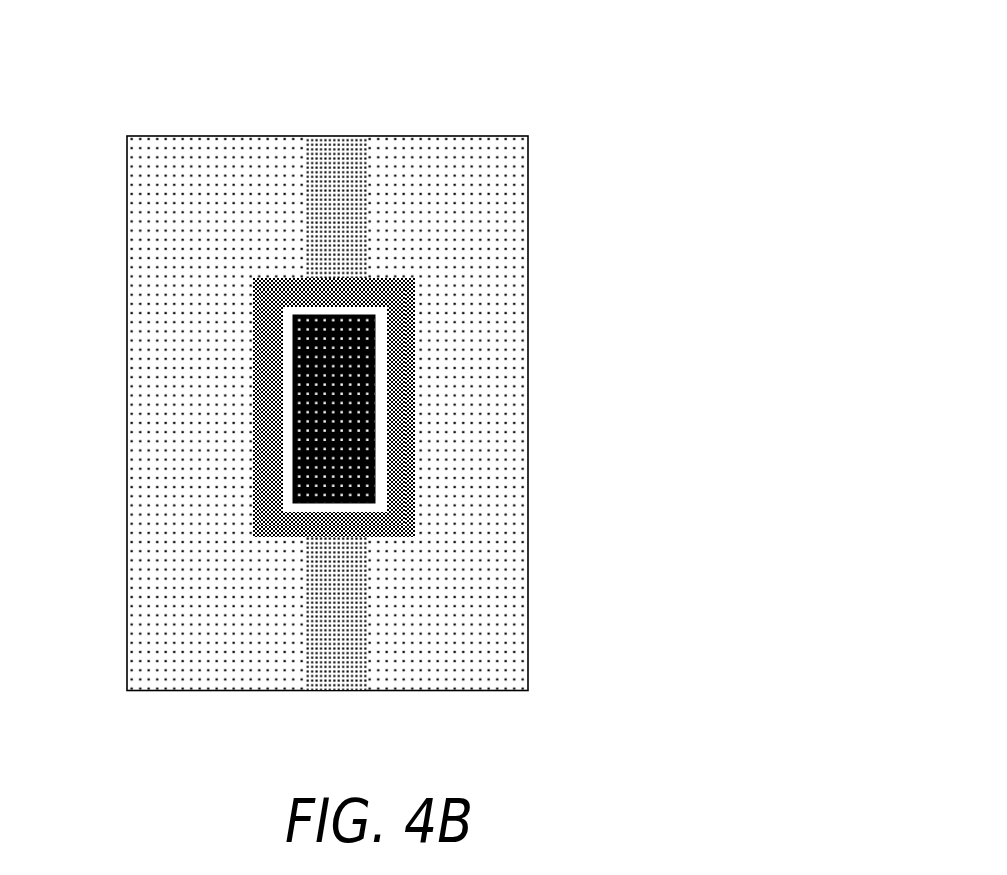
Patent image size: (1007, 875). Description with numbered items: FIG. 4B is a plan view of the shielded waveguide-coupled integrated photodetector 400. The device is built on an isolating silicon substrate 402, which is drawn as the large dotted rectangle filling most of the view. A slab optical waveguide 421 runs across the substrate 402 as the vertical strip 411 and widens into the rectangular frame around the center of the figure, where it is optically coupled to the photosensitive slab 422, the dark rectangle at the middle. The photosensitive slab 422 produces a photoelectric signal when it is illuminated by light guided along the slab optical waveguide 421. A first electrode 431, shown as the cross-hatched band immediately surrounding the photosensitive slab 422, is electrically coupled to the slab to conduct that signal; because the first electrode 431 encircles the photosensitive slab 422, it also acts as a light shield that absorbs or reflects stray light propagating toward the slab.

The integrated photodetector 400 is at (368, 354).
The isolating silicon substrate 402 is at (528, 673).
The fin / active region strip 411 is at (363, 209).
The slab optical waveguide 421 is at (415, 448).
The first electrode 431 is at (405, 383).
The photosensitive slab 422 is at (300, 402).